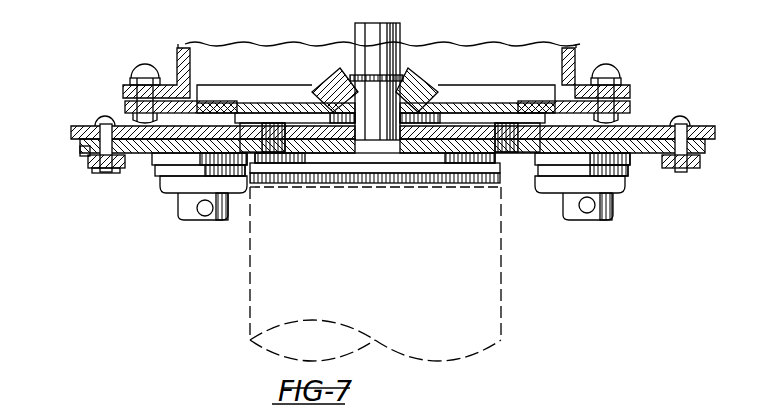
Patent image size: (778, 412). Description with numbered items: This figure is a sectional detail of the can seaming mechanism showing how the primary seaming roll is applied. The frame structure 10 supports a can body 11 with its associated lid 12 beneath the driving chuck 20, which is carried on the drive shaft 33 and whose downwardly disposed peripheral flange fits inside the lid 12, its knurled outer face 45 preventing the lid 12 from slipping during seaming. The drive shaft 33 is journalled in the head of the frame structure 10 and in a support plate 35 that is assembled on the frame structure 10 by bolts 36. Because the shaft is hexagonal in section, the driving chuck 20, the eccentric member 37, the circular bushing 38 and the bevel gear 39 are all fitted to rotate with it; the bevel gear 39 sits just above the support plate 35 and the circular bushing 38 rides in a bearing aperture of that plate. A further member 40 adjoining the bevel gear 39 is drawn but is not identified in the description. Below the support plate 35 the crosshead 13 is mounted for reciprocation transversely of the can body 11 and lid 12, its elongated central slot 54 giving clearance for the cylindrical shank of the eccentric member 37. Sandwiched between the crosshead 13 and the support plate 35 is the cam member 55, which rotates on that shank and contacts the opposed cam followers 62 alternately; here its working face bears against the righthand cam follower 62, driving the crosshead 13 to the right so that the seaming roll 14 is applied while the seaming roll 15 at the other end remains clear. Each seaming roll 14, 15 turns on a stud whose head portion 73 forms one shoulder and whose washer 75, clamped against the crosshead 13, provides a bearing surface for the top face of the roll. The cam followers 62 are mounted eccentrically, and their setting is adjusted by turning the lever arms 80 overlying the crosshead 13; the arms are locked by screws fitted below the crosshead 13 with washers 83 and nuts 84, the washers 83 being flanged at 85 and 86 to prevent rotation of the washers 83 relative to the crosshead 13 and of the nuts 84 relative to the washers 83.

The frame structure 10 is at (130, 80).
The can body 11 is at (250, 311).
The lid 12 is at (531, 215).
The crosshead 13 is at (655, 152).
The seaming roll 14 is at (162, 190).
The seaming roll 15 is at (628, 190).
The driving chuck 20 is at (493, 160).
The drive shaft 33 is at (398, 30).
The support plate 35 is at (128, 110).
The bolts 36 is at (150, 42).
The eccentric member 37 is at (286, 118).
The circular bushing 38 is at (320, 108).
The bevel gear 39 is at (336, 80).
The right wedge member 40 is at (400, 95).
The knurled outer face 45 is at (300, 188).
The elongated central slot 54 is at (458, 178).
The cam member 55 is at (480, 112).
The cam followers 62 is at (255, 123).
The head portion 73 is at (190, 218).
The washer 75 is at (152, 160).
The lever arm 80 is at (72, 130).
The washers 83 is at (88, 162).
The nuts 84 is at (116, 168).
The flange 85 is at (80, 151).
The flange 86 is at (96, 173).